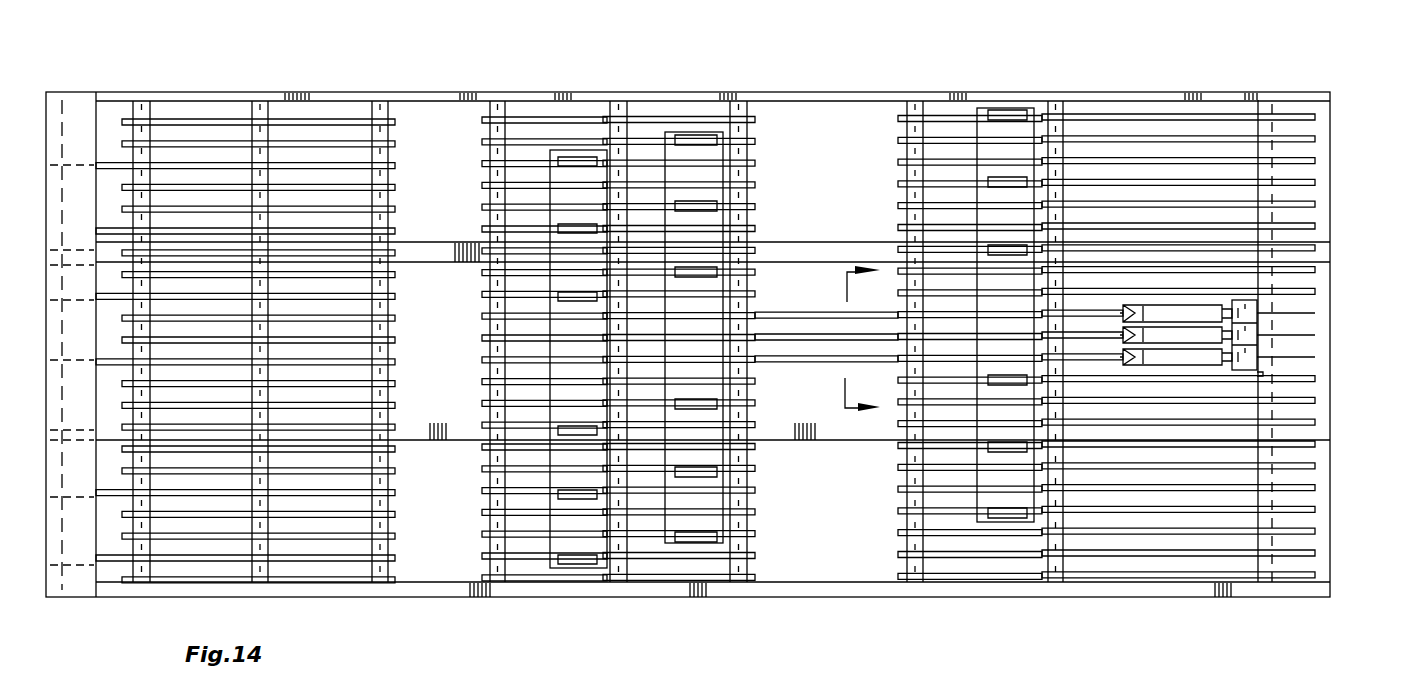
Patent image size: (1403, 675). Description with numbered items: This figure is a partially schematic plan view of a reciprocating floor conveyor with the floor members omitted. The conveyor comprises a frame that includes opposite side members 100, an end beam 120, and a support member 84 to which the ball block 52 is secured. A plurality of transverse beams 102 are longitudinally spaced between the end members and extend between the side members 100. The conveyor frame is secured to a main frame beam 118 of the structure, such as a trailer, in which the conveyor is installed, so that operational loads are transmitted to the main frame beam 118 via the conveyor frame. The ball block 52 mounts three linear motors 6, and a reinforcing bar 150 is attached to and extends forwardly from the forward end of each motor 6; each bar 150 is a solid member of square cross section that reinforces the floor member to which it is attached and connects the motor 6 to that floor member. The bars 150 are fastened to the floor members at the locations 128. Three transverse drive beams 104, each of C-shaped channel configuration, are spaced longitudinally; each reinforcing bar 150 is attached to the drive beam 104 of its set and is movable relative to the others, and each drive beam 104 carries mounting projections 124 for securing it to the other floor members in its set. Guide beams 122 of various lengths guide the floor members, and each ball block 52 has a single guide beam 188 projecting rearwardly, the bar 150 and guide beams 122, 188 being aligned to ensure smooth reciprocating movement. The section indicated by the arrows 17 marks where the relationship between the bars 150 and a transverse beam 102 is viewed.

The side member 100 is at (845, 90).
The support member 84 is at (1318, 97).
The end beam 120 is at (80, 590).
The transverse beam 102 is at (150, 113).
The guide beam 122 is at (898, 118).
The main frame beam 118 is at (425, 240).
The transverse drive beam 104 is at (548, 568).
The mounting projection 124 is at (563, 305).
The reinforcing bar 150 is at (772, 330).
The fastening location 128 is at (600, 312).
The linear motor 6 is at (1186, 293).
The guide beam 188 is at (1313, 350).
The ball block 52 is at (1270, 378).
The section line 17 is at (839, 339).